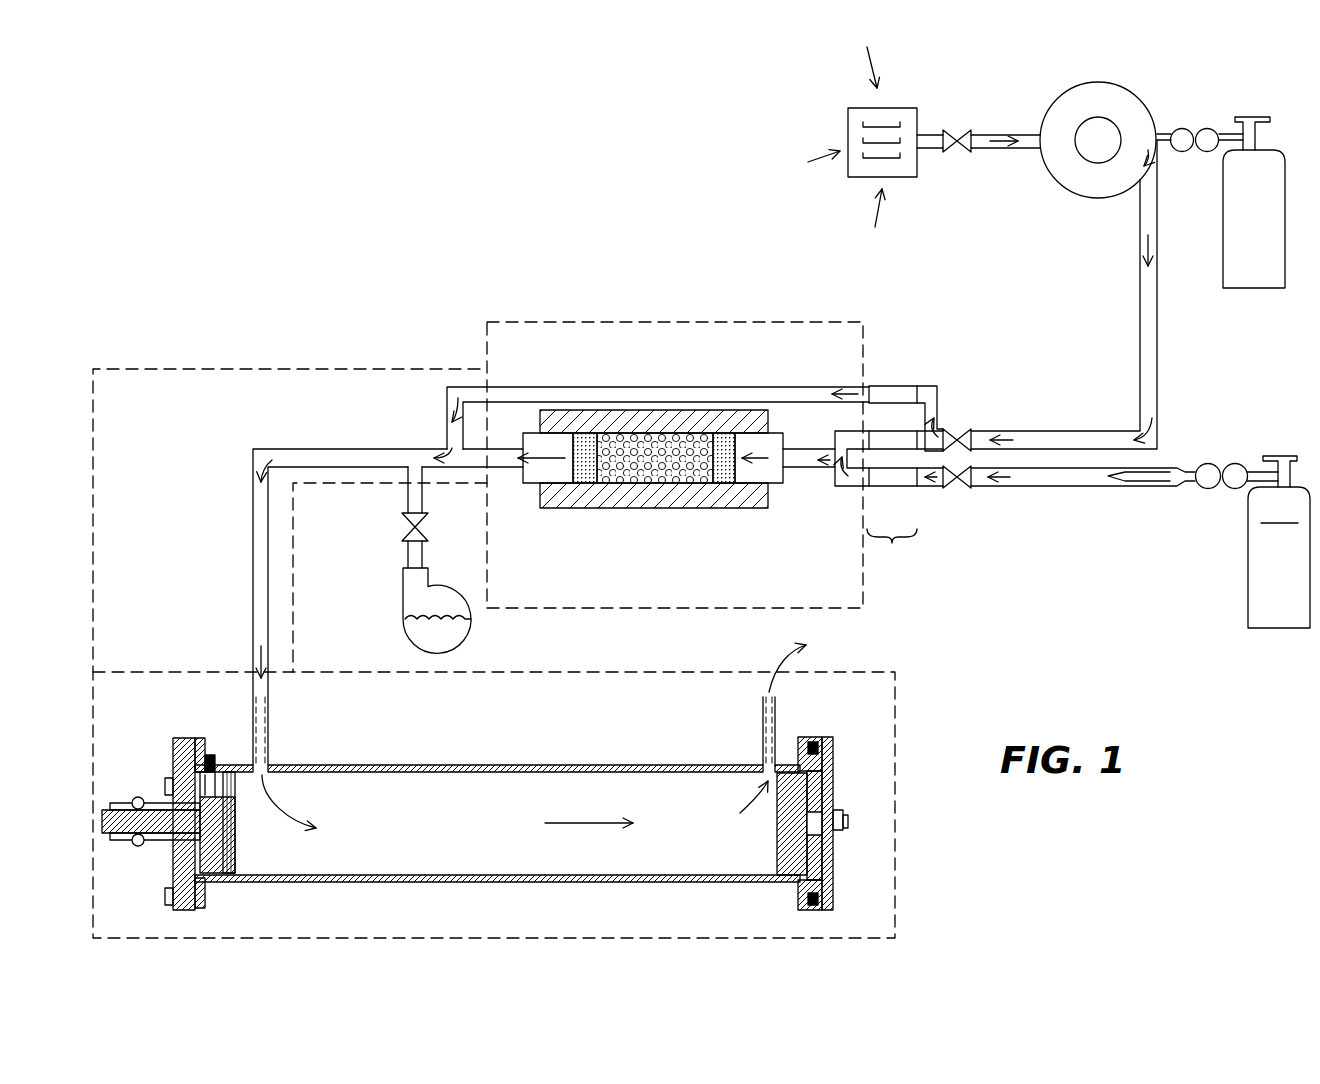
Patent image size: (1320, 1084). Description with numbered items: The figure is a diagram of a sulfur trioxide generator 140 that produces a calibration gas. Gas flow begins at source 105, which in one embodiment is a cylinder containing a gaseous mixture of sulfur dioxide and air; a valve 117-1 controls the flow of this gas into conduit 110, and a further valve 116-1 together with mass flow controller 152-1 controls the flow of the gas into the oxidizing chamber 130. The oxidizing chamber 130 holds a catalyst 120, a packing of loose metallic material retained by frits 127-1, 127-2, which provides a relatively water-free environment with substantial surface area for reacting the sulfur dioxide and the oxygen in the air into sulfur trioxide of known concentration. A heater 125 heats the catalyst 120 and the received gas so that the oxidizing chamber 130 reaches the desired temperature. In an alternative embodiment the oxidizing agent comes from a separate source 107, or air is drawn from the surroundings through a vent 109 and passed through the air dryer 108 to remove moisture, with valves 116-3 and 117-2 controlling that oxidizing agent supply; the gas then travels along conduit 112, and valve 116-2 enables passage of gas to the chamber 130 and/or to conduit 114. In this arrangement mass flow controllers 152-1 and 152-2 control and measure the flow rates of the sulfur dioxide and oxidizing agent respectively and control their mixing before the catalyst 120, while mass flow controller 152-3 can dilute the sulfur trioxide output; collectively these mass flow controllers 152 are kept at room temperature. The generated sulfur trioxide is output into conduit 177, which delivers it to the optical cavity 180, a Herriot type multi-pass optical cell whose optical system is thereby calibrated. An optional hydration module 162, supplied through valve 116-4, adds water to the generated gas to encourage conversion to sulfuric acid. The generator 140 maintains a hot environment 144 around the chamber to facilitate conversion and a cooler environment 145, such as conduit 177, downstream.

The source 105 is at (1279, 542).
The source 107 is at (1272, 225).
The air dryer 108 is at (1118, 113).
The vent 109 is at (863, 108).
The conduit 110 is at (1030, 486).
The conduit 112 is at (1078, 430).
The conduit 114 is at (640, 387).
The valve 116-1 is at (955, 488).
The valve 116-2 is at (957, 429).
The valve 116-3 is at (957, 130).
The valve 116-4 is at (406, 527).
The valve 117-1 is at (1222, 462).
The valve 117-2 is at (1183, 128).
The catalyst 120 is at (693, 478).
The heater 125 is at (553, 497).
The frit 127-1 is at (730, 478).
The frit 127-2 is at (590, 478).
The oxidizing chamber 130 is at (762, 473).
The sulfur trioxide generator 140 is at (666, 255).
The environment 144 is at (510, 322).
The environment 145 is at (458, 369).
The mass flow controller 152 is at (892, 549).
The mass flow controller 152-1 is at (897, 486).
The mass flow controller 152-2 is at (893, 431).
The mass flow controller 152-3 is at (893, 386).
The hydration module 162 is at (405, 622).
The conduit 177 is at (253, 548).
The optical cavity 180 is at (512, 836).